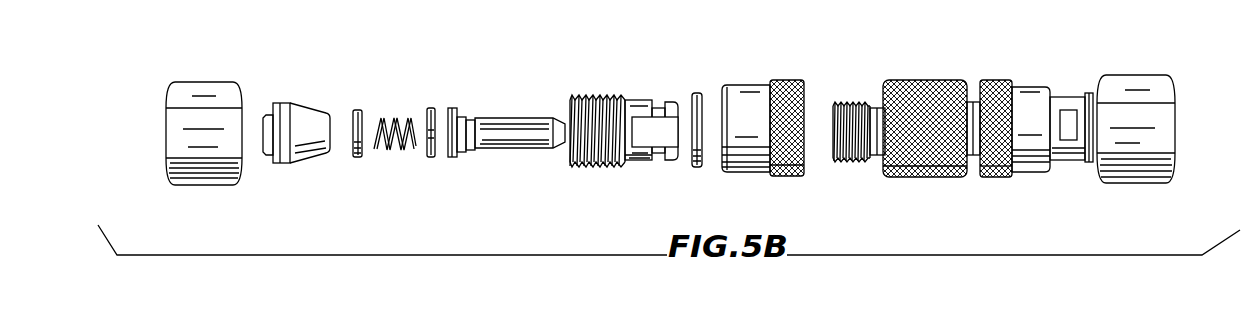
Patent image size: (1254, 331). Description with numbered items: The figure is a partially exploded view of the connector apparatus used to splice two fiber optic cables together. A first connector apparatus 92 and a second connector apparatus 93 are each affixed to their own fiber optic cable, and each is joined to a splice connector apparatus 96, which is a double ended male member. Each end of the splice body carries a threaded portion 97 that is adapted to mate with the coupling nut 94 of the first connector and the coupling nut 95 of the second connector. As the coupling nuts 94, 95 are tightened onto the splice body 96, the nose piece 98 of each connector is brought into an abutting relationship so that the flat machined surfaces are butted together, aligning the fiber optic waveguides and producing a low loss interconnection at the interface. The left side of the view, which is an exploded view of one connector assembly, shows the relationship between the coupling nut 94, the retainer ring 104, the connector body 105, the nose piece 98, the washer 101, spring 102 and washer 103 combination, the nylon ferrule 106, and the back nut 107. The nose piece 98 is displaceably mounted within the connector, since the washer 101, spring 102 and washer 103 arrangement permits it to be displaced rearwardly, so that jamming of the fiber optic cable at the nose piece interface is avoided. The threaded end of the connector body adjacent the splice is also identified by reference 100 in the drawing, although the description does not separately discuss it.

The first connector apparatus 92 is at (807, 72).
The second connector apparatus 93 is at (1182, 66).
The coupling nut 94 is at (743, 171).
The coupling nut 95 is at (1003, 176).
The splice connector apparatus 96 is at (937, 70).
The threaded portion 97 is at (855, 162).
The nose piece 98 is at (497, 149).
The threaded plug 100 is at (566, 125).
The washer 101 is at (357, 158).
The spring 102 is at (385, 152).
The washer 103 is at (430, 107).
The retainer ring 104 is at (697, 167).
The connector body 105 is at (640, 162).
The nylon ferrule 106 is at (307, 163).
The back nut 107 is at (213, 185).